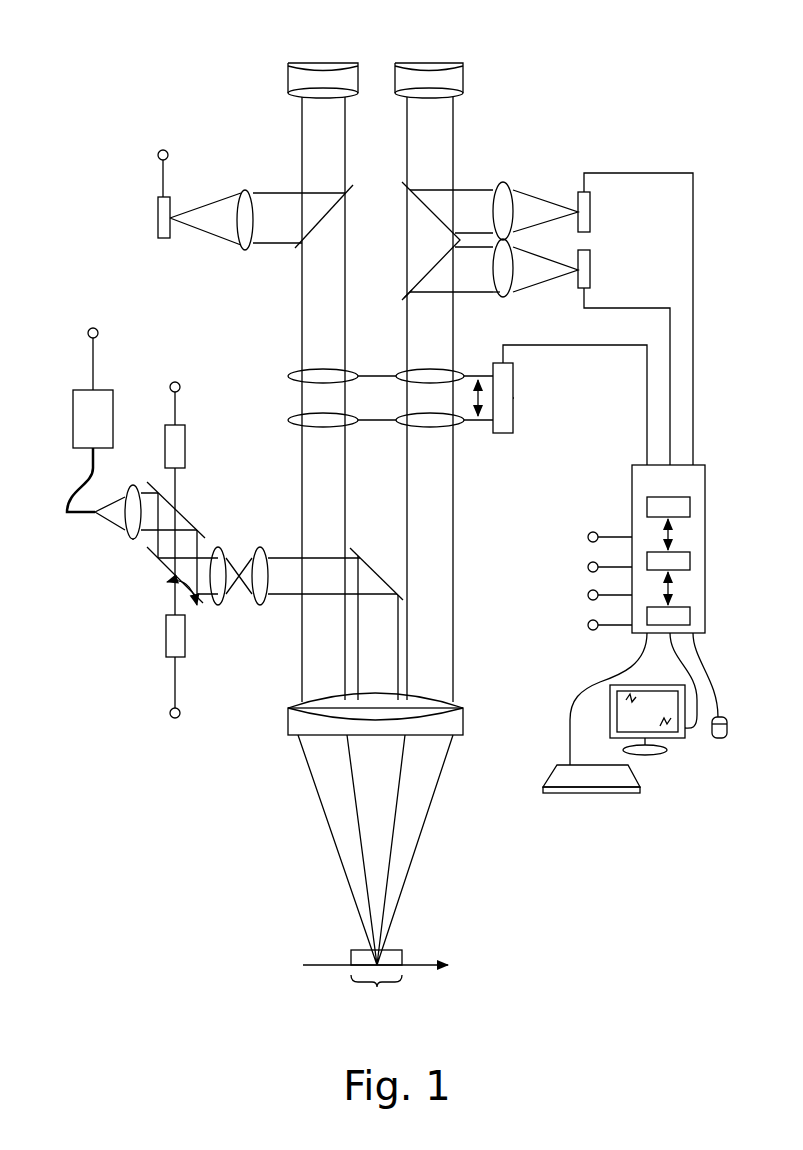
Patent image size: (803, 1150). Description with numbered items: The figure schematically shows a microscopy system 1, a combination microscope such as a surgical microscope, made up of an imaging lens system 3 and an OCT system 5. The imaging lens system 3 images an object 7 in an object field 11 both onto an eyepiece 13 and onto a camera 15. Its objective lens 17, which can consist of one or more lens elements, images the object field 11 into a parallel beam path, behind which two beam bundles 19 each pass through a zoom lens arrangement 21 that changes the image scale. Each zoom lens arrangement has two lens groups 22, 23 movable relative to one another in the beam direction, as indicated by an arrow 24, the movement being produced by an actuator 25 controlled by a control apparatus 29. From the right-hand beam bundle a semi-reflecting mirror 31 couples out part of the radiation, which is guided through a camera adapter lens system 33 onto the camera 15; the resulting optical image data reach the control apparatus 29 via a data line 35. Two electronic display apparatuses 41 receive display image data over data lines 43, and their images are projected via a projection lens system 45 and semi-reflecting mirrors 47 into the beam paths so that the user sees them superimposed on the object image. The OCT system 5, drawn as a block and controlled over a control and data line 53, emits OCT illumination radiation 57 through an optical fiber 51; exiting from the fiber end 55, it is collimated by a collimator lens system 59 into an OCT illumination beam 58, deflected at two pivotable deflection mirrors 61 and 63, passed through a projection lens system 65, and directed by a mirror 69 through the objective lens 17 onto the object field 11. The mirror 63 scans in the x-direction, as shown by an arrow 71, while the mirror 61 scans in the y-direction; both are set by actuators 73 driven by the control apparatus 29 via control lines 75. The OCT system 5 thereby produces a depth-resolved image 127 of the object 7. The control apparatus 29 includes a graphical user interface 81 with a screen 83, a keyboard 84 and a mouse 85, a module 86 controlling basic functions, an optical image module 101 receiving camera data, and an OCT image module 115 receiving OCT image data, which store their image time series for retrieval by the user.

The microscopy system 1 is at (670, 72).
The imaging lens system 3 is at (553, 98).
The OCT system 5 is at (73, 400).
The object 7 is at (377, 987).
The object field 11 is at (345, 948).
The eyepiece 13 is at (288, 80).
The camera 15 is at (590, 265).
The objective lens 17 is at (463, 722).
The beam bundles 19 is at (300, 692).
The zoom lens arrangement 21 is at (263, 388).
The lens group 22 is at (290, 424).
The lens group 23 is at (290, 372).
The arrow 24 is at (513, 375).
The actuator 25 is at (513, 398).
The control apparatus 29 is at (697, 465).
The semi-reflecting mirror 31 is at (408, 290).
The camera adapter lens system 33 is at (513, 297).
The data line 35 is at (640, 308).
The electronic display apparatus 41 is at (158, 210).
The data lines 43 is at (158, 155).
The projection lens system 45 is at (245, 192).
The semi-reflecting mirrors 47 is at (338, 200).
The optical fiber 51 is at (72, 490).
The control and data line 53 is at (95, 358).
The end of the optical fiber 55 is at (98, 515).
The OCT illumination radiation 57 is at (113, 498).
The OCT illumination beam 58 is at (395, 825).
The collimator lens system 59 is at (133, 542).
The deflection mirror 61 is at (188, 522).
The deflection mirror 63 is at (160, 562).
The projection lens system 65 is at (242, 612).
The mirror 69 is at (362, 560).
The arrow 71 is at (188, 608).
The actuators 73 is at (165, 445).
The control lines 75 is at (178, 405).
The graphical user interface 81 is at (560, 702).
The screen 83 is at (667, 742).
The keyboard 84 is at (590, 793).
The mouse 85 is at (720, 738).
The module 86 is at (690, 616).
The optical image module 101 is at (690, 561).
The OCT image module 115 is at (690, 507).
The depth-resolved image 127 is at (402, 957).